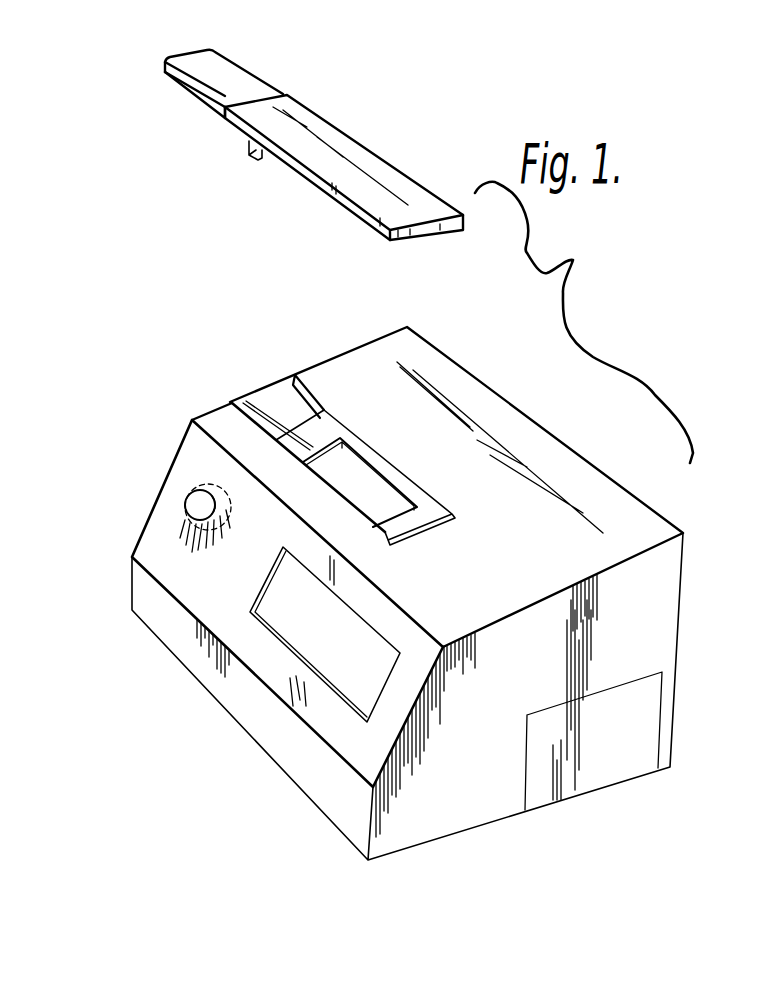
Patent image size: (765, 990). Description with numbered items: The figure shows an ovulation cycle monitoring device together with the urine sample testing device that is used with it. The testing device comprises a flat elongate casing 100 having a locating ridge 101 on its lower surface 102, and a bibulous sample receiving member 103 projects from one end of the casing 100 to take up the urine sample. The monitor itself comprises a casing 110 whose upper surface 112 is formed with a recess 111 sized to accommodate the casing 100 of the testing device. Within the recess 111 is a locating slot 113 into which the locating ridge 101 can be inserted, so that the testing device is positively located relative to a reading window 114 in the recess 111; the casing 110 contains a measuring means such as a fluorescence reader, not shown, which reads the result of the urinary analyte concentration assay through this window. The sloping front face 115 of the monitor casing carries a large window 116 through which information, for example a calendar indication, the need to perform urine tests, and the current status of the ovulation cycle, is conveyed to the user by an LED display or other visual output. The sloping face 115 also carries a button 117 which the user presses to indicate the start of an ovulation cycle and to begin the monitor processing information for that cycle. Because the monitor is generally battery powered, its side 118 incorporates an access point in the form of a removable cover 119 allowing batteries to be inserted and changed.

The casing 100 is at (360, 157).
The locating ridge 101 is at (254, 160).
The lower surface 102 is at (233, 132).
The bibulous sample receiving member 103 is at (233, 82).
The casing 110 is at (362, 608).
The recess 111 is at (430, 490).
The upper surface 112 is at (513, 435).
The locating slot 113 is at (316, 405).
The reading window 114 is at (362, 463).
The sloping front face 115 is at (160, 553).
The large window 116 is at (330, 645).
The button 117 is at (196, 503).
The side 118 is at (470, 790).
The removable cover 119 is at (620, 753).